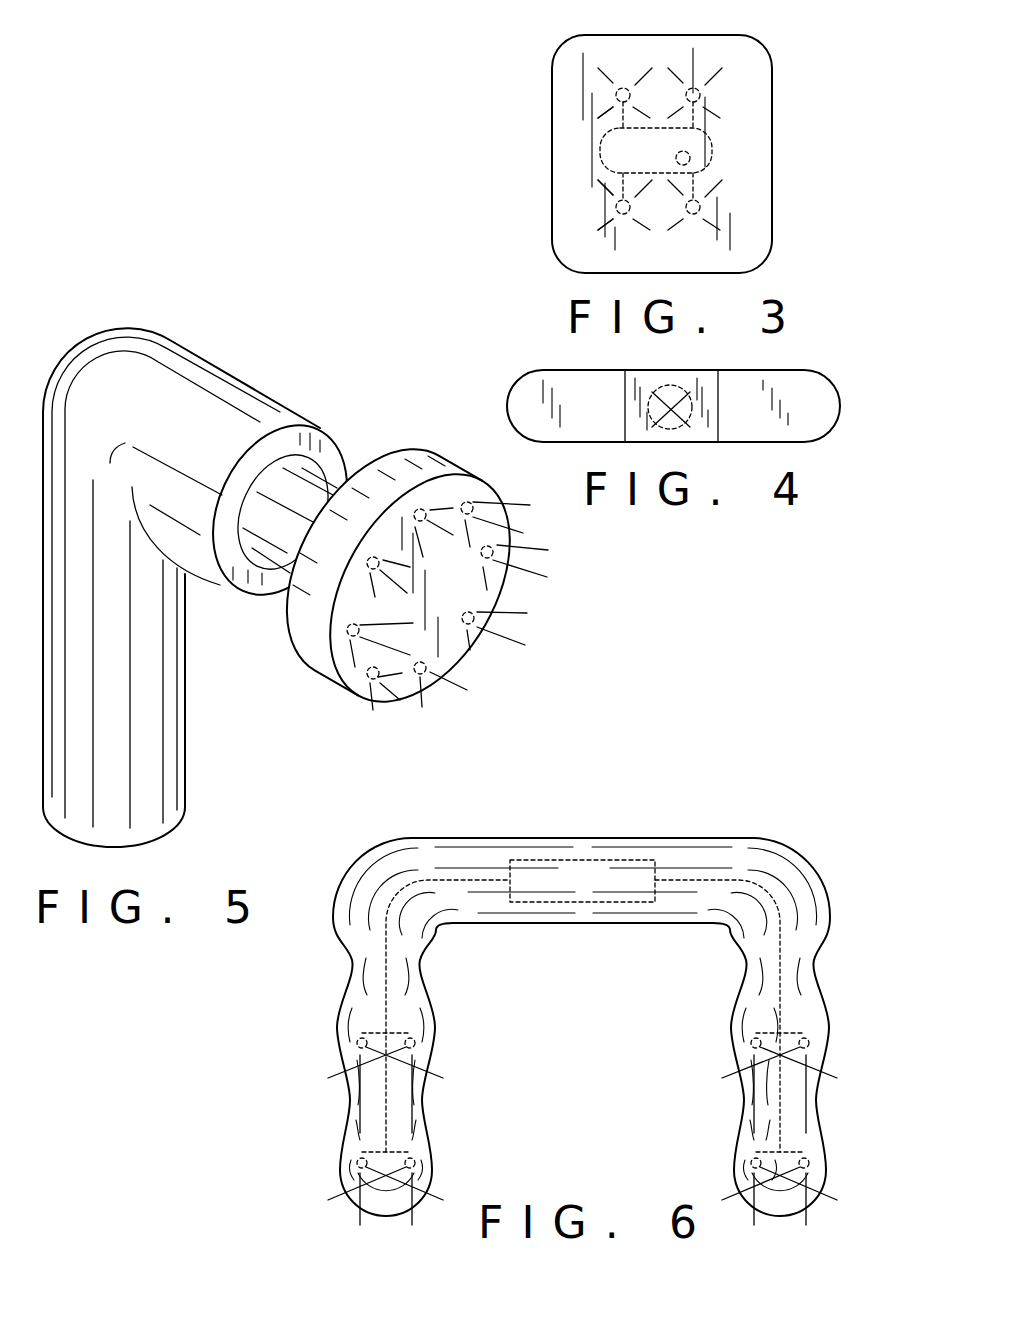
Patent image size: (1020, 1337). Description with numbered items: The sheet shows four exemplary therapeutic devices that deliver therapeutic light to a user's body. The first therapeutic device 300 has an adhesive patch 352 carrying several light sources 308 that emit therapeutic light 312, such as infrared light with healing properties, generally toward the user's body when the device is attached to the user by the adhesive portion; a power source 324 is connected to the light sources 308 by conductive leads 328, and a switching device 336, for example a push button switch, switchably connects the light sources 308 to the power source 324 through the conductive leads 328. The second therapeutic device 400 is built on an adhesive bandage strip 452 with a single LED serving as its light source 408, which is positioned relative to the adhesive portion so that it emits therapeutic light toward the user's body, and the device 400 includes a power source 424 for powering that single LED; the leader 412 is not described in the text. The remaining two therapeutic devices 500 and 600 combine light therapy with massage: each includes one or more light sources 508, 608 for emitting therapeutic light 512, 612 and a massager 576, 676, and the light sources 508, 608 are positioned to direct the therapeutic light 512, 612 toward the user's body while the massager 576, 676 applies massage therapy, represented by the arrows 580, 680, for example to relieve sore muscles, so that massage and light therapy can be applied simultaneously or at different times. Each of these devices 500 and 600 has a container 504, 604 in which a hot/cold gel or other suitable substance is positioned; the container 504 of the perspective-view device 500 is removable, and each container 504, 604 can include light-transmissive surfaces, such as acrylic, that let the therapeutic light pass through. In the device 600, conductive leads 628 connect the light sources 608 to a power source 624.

In FIG. 3, the therapeutic device 300 is at (522, 60).
In FIG. 3, the adhesive patch 352 is at (763, 45).
In FIG. 3, the light sources 308 is at (702, 92).
In FIG. 3, the conductive leads 328 is at (598, 108).
In FIG. 3, the power source 324 is at (600, 147).
In FIG. 3, the switching device 336 is at (692, 157).
In FIG. 3, the therapeutic light 312 is at (605, 232).
In FIG. 4, the therapeutic device 400 is at (852, 362).
In FIG. 4, the adhesive bandage strip 452 is at (817, 397).
In FIG. 4, the light source 408 is at (682, 427).
In FIG. 4, the spray jets 412 is at (683, 385).
In FIG. 4, the power source 424 is at (655, 400).
In FIG. 5, the therapeutic device 500 is at (112, 315).
In FIG. 5, the massager 576 is at (387, 457).
In FIG. 5, the arrows 580 is at (458, 434).
In FIG. 5, the container 504 is at (463, 468).
In FIG. 5, the light sources 508 is at (490, 557).
In FIG. 5, the therapeutic light 512 is at (468, 690).
In FIG. 6, the therapeutic device 600 is at (773, 812).
In FIG. 6, the container 604 is at (822, 958).
In FIG. 6, the conductive leads 628 is at (472, 878).
In FIG. 6, the power source 624 is at (585, 858).
In FIG. 6, the light sources 608 is at (424, 1038).
In FIG. 6, the therapeutic light 612 is at (333, 1196).
In FIG. 6, the massager 676 is at (350, 1111).
In FIG. 6, the arrows 680 is at (698, 1163).